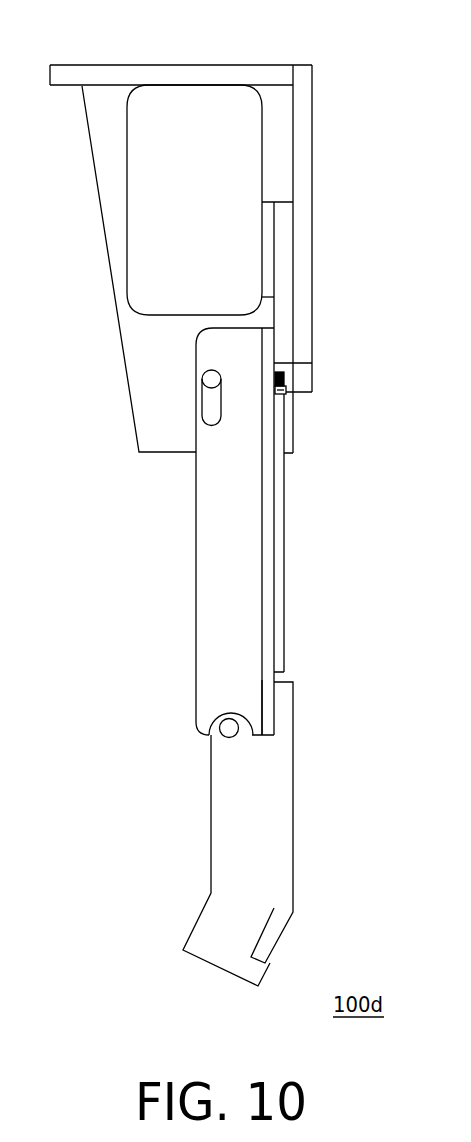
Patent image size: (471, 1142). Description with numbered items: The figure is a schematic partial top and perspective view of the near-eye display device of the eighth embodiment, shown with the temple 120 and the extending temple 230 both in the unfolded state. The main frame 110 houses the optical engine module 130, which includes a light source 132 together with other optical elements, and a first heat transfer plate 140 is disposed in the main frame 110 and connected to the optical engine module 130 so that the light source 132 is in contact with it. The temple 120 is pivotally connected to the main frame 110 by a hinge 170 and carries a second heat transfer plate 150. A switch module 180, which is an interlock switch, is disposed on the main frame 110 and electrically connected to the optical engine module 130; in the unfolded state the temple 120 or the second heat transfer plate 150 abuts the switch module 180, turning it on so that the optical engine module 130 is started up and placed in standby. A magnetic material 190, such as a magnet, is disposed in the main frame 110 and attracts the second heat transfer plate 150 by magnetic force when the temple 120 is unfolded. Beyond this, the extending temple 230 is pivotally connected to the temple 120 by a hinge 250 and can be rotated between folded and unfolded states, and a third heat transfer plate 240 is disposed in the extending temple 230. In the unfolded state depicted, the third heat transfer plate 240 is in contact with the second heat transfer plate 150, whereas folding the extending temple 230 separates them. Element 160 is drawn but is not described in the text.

The main frame 110 is at (298, 173).
The temple 120 is at (232, 555).
The optical engine module 130 is at (204, 161).
The light source 132 is at (262, 236).
The first heat transfer plate 140 is at (283, 266).
The second heat transfer plate 150 is at (267, 590).
The top plate 160 is at (97, 78).
The hinge 170 is at (211, 379).
The switch module 180 is at (285, 388).
The magnetic material 190 is at (285, 373).
The extending temple 230 is at (230, 800).
The third heat transfer plate 240 is at (283, 802).
The hinge 250 is at (229, 728).